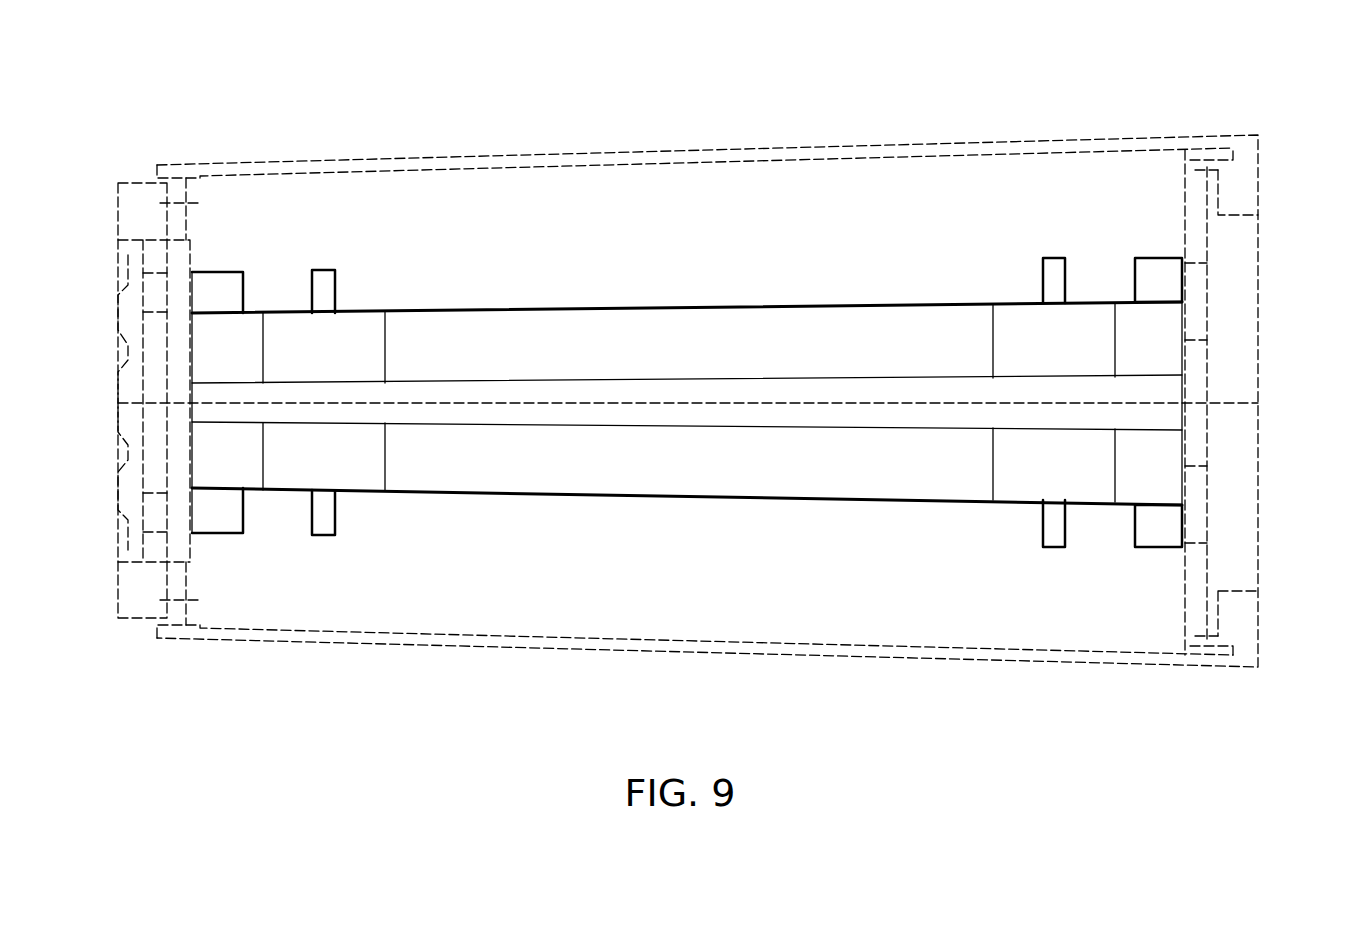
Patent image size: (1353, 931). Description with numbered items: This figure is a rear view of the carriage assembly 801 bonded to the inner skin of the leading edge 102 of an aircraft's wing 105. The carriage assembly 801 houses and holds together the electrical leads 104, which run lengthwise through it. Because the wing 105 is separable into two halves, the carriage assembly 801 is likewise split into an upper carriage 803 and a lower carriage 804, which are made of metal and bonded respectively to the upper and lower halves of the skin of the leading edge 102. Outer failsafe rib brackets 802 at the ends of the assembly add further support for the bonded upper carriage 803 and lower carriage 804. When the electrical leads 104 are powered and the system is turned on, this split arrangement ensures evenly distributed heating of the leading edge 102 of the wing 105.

The leading edge 102 is at (1125, 390).
The electrical leads 104 is at (355, 330).
The wing 105 is at (163, 165).
The carriage assembly 801 is at (800, 270).
The failsafe rib brackets 802 is at (1162, 270).
The upper carriage 803 is at (665, 330).
The lower carriage 804 is at (543, 472).